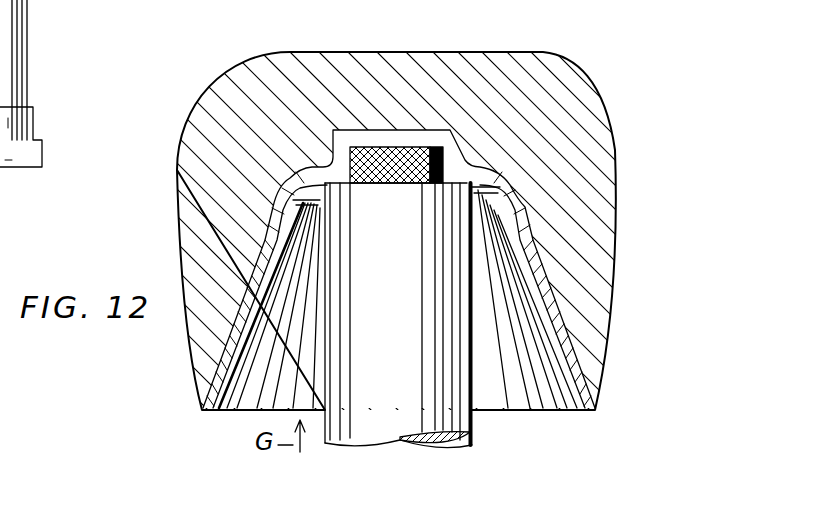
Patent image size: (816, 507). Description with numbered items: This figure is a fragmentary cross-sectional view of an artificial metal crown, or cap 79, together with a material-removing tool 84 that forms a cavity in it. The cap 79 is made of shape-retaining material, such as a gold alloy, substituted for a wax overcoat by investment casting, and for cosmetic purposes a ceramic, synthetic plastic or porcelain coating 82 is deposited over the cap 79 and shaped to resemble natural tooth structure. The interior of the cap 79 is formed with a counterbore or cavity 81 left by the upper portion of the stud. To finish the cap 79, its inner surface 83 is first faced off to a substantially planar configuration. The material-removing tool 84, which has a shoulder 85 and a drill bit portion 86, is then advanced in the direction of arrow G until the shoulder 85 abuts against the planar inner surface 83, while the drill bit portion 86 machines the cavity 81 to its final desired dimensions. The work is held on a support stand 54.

The support stand 54 is at (57, 92).
The porcelain coating 82 is at (240, 75).
The drill bit portion 86 is at (380, 147).
The cavity 81 is at (430, 148).
The cap 79 is at (260, 255).
The inner surface 83 is at (327, 193).
The shoulder 85 is at (453, 188).
The material-removing tool 84 is at (450, 378).